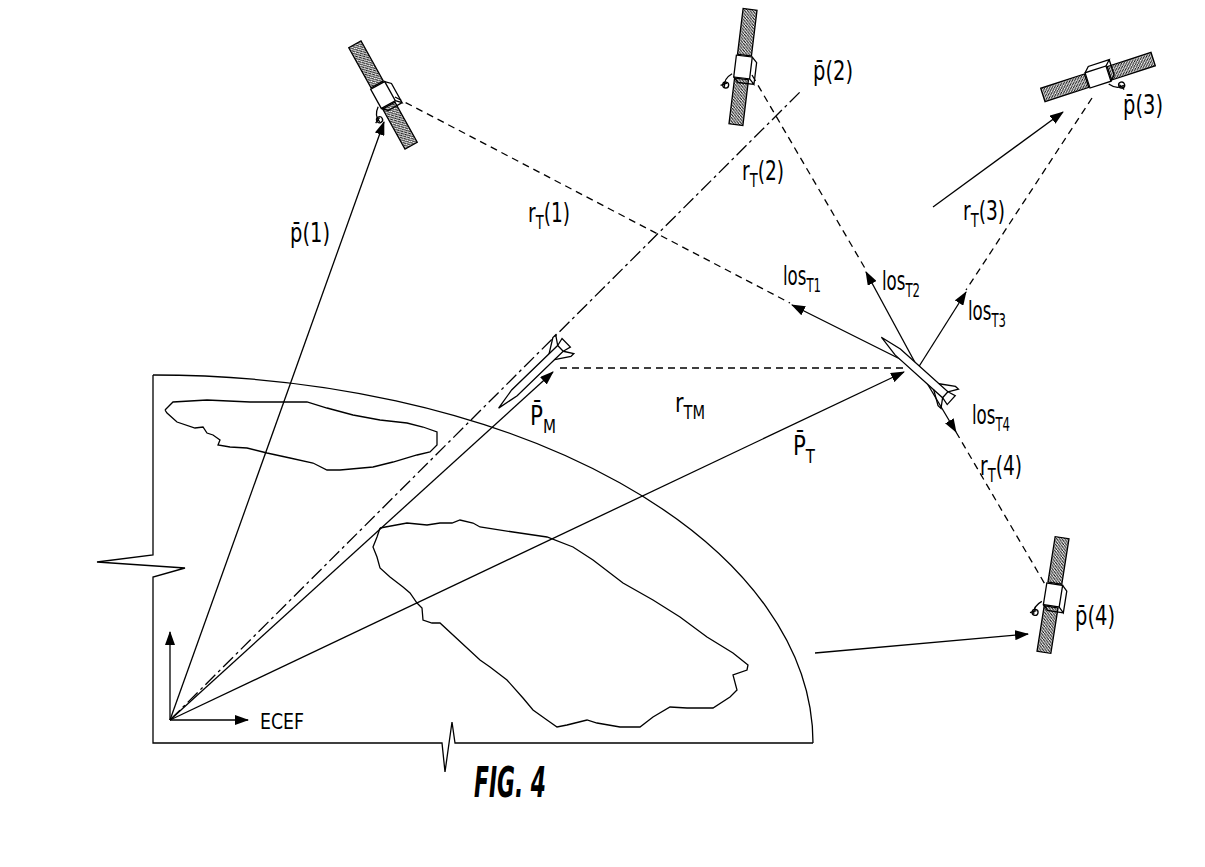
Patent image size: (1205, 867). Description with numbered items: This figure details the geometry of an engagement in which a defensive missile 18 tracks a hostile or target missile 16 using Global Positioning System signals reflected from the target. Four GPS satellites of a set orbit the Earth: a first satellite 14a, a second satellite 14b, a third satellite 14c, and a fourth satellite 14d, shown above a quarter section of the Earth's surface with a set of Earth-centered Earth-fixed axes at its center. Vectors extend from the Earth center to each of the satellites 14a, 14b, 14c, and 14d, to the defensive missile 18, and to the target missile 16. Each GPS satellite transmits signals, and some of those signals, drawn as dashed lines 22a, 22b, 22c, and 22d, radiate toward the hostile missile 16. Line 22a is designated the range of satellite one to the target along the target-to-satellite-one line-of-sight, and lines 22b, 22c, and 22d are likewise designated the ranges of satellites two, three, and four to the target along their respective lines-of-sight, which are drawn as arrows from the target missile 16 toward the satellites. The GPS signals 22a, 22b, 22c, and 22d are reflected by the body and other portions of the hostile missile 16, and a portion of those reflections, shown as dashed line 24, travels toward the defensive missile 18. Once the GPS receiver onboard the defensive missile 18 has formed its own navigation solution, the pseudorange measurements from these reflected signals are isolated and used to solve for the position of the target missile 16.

The first GPS satellite 14a is at (376, 100).
The second GPS satellite 14b is at (738, 72).
The third GPS satellite 14c is at (1090, 76).
The fourth GPS satellite 14d is at (1060, 589).
The hostile missile 16 is at (930, 371).
The defensive missile 18 is at (528, 367).
The GPS signal from first satellite to target 22a is at (532, 166).
The GPS signal from second satellite to target 22b is at (783, 126).
The GPS signal from third satellite to target 22c is at (1063, 142).
The GPS signal from fourth satellite to target 22d is at (1016, 539).
The reflected GPS signal path 24 is at (780, 368).